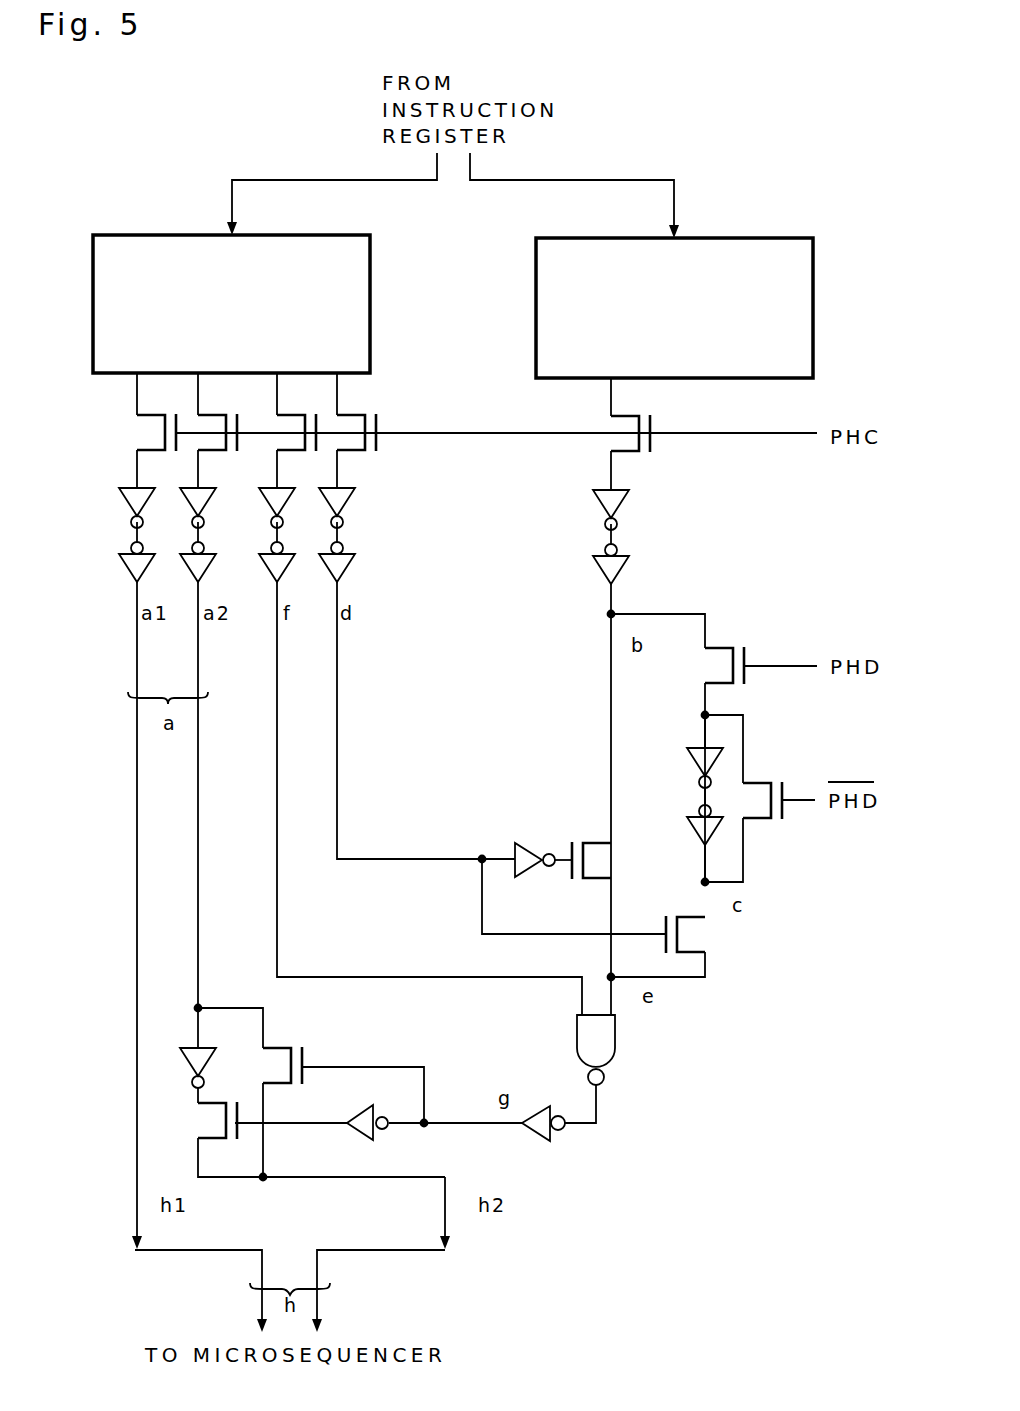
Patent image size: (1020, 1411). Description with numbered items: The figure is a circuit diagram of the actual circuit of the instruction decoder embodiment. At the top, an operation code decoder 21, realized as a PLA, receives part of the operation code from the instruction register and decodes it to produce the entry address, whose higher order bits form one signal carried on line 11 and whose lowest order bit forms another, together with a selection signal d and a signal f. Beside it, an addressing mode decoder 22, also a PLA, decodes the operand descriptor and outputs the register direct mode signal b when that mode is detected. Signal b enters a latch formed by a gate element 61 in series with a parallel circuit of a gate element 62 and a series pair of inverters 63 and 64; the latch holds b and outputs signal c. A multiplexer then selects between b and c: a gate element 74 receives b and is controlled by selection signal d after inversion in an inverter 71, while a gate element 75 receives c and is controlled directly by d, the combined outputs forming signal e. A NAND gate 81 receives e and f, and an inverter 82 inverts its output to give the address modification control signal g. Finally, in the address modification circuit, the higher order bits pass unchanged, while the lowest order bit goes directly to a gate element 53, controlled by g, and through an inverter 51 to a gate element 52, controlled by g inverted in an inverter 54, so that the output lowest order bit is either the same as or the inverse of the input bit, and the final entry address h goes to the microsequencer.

The operation code decoder 21 is at (371, 307).
The addressing mode decoder 22 is at (536, 315).
The signal line 11 is at (123, 806).
The gate element 61 is at (726, 625).
The gate element 62 is at (780, 837).
The inverter 63 is at (690, 766).
The inverter 64 is at (692, 835).
The inverter 71 is at (524, 837).
The gate element 74 is at (582, 837).
The gate element 75 is at (713, 938).
The NAND gate 81 is at (630, 1047).
The inverter 82 is at (563, 1142).
The inverter 51 is at (210, 1067).
The gate element 52 is at (196, 1117).
The gate element 53 is at (300, 1034).
The inverter 54 is at (387, 1138).